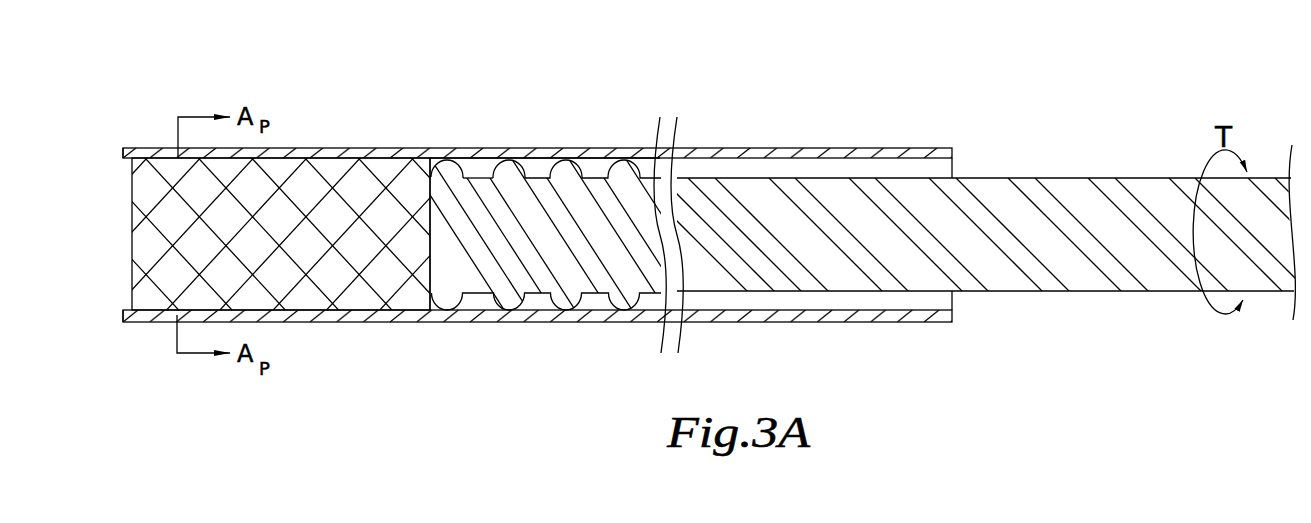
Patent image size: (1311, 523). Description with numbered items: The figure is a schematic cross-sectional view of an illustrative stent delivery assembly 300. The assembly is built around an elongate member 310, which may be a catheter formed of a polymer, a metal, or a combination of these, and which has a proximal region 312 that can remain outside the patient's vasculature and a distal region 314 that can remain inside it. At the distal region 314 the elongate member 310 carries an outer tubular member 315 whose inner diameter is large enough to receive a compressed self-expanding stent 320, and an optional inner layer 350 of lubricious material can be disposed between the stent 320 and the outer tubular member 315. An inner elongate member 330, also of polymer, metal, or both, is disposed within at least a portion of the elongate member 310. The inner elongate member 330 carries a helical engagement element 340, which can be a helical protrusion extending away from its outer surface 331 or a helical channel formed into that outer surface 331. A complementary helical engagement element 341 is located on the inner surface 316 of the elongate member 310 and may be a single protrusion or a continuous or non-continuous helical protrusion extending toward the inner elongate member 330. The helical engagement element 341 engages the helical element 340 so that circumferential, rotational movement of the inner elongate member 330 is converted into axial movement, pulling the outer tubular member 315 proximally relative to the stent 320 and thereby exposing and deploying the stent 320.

The stent delivery assembly 300 is at (127, 108).
The elongate member 310 is at (615, 127).
The proximal region 312 is at (950, 130).
The distal region 314 is at (300, 110).
The outer tubular member 315 is at (437, 158).
The inner surface 316 is at (486, 120).
The self-expanding stent 320 is at (307, 270).
The inner elongate member 330 is at (1153, 275).
The outer surface 331 is at (512, 293).
The helical engagement element 340 is at (537, 303).
The helical engagement element 341 is at (483, 167).
The inner layer 350 is at (147, 315).